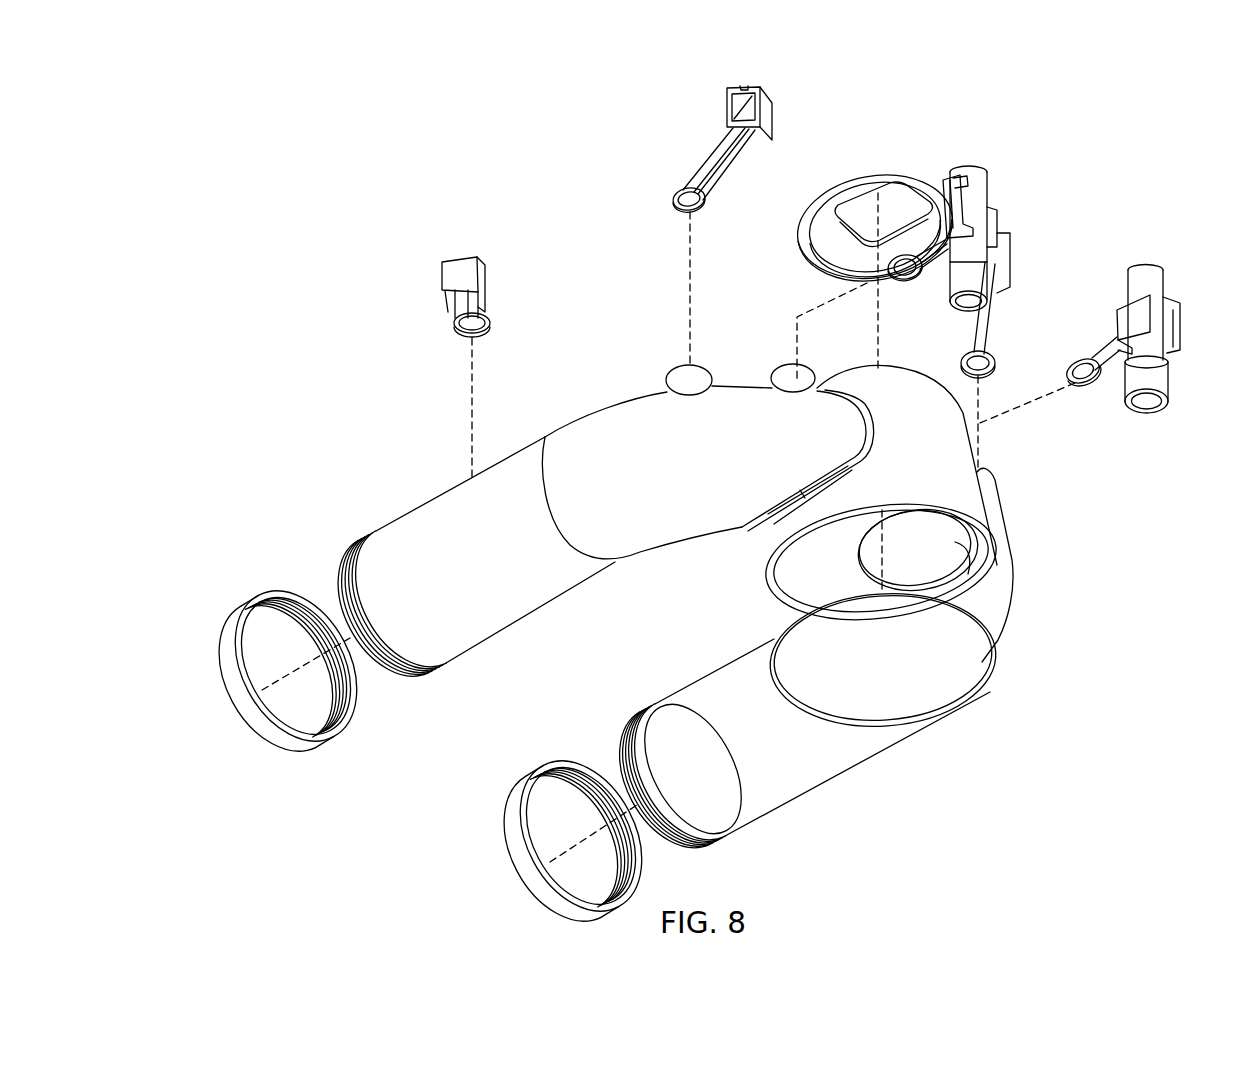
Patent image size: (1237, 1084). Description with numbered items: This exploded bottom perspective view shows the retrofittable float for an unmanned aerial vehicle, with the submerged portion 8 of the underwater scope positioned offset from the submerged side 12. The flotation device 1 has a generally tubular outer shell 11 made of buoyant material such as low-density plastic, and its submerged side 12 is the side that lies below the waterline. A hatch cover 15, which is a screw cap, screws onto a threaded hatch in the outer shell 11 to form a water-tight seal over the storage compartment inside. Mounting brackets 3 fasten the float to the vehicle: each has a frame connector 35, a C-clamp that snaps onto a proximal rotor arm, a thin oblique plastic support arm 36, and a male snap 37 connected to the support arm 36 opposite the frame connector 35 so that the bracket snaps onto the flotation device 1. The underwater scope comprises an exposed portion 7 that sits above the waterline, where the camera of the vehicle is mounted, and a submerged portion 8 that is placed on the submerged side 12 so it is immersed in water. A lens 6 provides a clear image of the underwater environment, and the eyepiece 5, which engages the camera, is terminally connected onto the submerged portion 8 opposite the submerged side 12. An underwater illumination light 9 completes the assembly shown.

The flotation device 1 is at (578, 600).
The mounting brackets 3 is at (722, 162).
The eyepiece 5 is at (880, 177).
The lens 6 is at (983, 683).
The exposed portion 7 is at (963, 413).
The submerged portion 8 is at (997, 570).
The underwater illumination light 9 is at (1167, 385).
The outer shell 11 is at (507, 618).
The submerged side 12 is at (698, 503).
The hatch cover 15 is at (230, 704).
The frame connector 35 is at (768, 113).
The support arm 36 is at (730, 175).
The male snap 37 is at (675, 195).